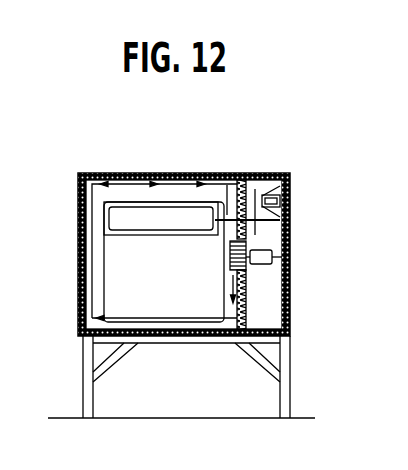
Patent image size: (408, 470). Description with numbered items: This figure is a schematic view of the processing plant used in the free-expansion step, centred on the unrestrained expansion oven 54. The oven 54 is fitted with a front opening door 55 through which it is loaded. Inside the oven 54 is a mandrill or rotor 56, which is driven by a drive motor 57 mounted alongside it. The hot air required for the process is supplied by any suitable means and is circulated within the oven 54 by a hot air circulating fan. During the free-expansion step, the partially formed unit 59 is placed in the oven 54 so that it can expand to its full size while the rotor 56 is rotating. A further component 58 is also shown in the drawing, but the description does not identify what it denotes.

The unrestrained expansion oven 54 is at (198, 164).
The front opening door 55 is at (78, 193).
The mandrill or rotor 56 is at (138, 234).
The drive motor 57 is at (290, 184).
The compressor unit 58 is at (290, 258).
The partially formed unit 59 is at (104, 287).